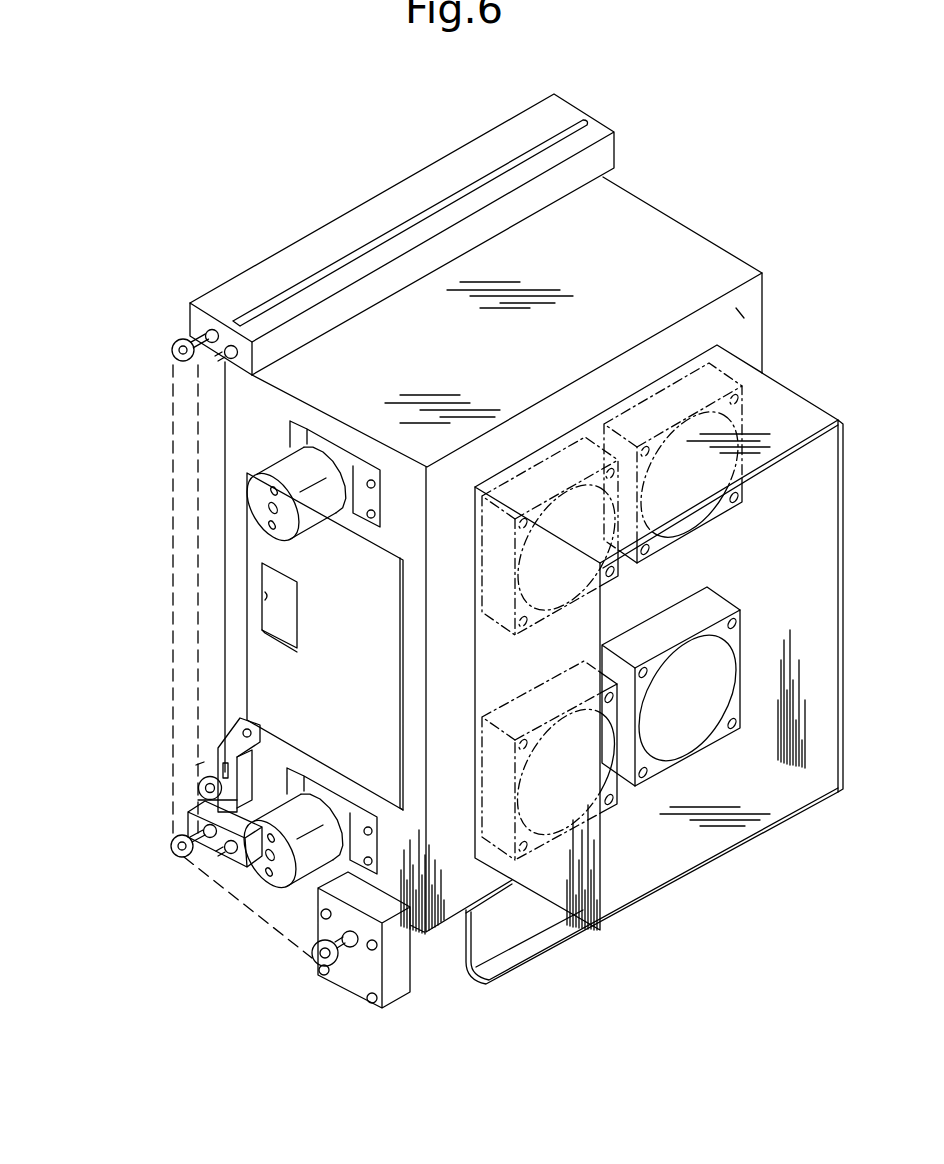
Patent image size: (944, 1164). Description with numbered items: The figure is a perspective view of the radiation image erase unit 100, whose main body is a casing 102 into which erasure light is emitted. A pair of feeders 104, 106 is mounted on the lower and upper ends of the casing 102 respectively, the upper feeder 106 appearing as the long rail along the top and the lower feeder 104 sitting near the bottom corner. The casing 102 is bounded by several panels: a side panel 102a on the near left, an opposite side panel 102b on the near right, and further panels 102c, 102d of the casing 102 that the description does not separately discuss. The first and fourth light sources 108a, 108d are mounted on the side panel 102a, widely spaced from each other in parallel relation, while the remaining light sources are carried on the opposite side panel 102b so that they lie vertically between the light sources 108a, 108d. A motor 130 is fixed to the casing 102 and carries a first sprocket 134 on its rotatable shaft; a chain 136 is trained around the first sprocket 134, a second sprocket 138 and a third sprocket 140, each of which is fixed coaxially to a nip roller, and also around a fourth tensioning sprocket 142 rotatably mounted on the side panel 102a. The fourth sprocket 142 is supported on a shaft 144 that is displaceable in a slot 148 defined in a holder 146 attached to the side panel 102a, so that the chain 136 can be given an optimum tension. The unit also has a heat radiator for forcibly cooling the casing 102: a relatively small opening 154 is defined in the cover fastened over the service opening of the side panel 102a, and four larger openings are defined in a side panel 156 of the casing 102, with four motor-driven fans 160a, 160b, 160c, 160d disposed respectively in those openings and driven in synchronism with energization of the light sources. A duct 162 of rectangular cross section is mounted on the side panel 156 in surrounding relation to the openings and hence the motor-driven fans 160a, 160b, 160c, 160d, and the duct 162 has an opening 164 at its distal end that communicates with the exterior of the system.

The radiation image erase unit 100 is at (707, 237).
The casing 102 is at (752, 263).
The side panel 102a is at (273, 417).
The opposite side panel 102b is at (757, 325).
The bottom plate of housing 102c is at (452, 910).
The top wall of housing 102d is at (628, 208).
The feeder 104 is at (186, 815).
The feeder 106 is at (262, 265).
The first light source 108a is at (290, 472).
The fourth light source 108d is at (310, 808).
The motor 130 is at (395, 983).
The first sprocket 134 is at (337, 957).
The chain 136 is at (243, 907).
The second sprocket 138 is at (175, 843).
The third sprocket 140 is at (178, 342).
The fourth tensioning sprocket 142 is at (198, 768).
The shaft 144 is at (203, 787).
The holder 146 is at (247, 720).
The slot 148 is at (240, 752).
The opening 154 is at (263, 600).
The side panel 156 is at (740, 312).
The motor-driven fan 160a is at (533, 480).
The motor-driven fan 160b is at (670, 400).
The motor-driven fan 160c is at (703, 753).
The motor-driven fan 160d is at (602, 800).
The duct 162 is at (772, 377).
The opening 164 is at (845, 477).